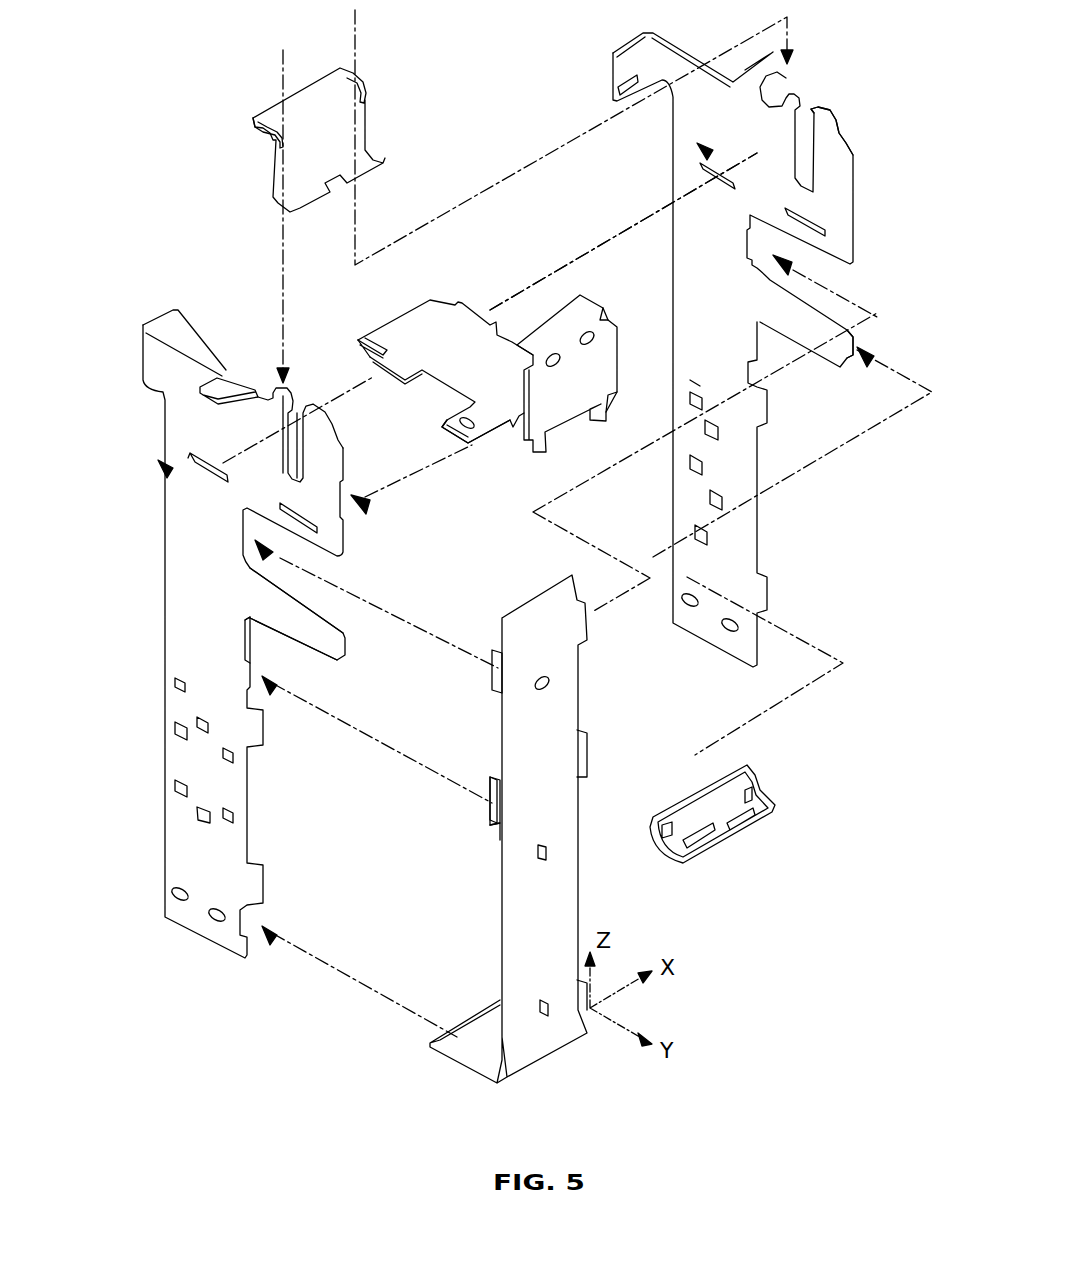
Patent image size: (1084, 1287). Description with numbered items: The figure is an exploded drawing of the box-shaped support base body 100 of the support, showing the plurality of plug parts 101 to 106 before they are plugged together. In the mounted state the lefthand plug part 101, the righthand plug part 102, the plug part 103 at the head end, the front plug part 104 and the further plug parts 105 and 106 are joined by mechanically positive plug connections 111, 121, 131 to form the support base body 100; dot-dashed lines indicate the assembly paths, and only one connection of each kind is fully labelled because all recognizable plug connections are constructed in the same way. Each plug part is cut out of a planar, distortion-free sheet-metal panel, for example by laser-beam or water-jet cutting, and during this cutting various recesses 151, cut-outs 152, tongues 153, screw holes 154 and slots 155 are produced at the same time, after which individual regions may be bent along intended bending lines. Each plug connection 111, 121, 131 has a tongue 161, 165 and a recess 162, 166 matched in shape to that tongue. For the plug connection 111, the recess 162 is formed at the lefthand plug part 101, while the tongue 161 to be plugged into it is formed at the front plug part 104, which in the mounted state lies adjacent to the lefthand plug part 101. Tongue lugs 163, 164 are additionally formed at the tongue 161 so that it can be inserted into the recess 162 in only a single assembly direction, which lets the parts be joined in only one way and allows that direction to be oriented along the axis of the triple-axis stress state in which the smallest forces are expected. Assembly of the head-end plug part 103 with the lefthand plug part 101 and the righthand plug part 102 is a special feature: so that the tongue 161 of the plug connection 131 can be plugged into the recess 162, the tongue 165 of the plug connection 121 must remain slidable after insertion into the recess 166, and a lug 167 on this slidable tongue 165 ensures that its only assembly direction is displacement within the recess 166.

The support base body 100 is at (152, 102).
The lefthand plug part 101 is at (186, 590).
The righthand plug part 102 is at (845, 215).
The plug part at the head end 103 is at (430, 297).
The front plug part 104 is at (555, 895).
The plug part 105 is at (320, 95).
The plug part 106 is at (740, 812).
The plug connection 111 is at (360, 730).
The plug connection 121 is at (607, 232).
The plug connection 131 is at (400, 496).
The recesses 151 is at (832, 108).
The cut-outs 152 is at (548, 855).
The tongues 153 is at (232, 383).
The screw holes 154 is at (168, 895).
The slots 155 is at (198, 818).
The tongue 161 is at (488, 815).
The recess 162 is at (232, 670).
The tongue lug 163 is at (488, 785).
The tongue lug 164 is at (490, 838).
The tongue 165 is at (399, 385).
The recess 166 is at (213, 480).
The lug 167 is at (370, 357).